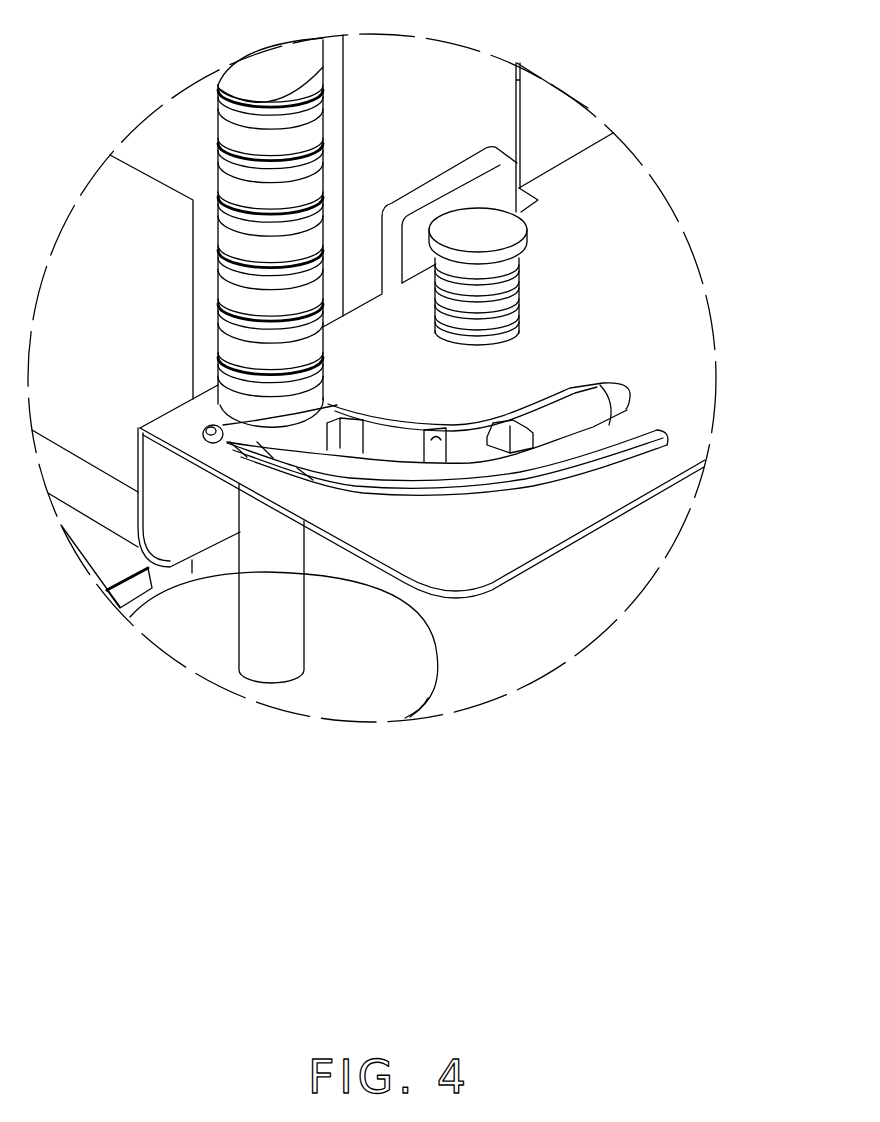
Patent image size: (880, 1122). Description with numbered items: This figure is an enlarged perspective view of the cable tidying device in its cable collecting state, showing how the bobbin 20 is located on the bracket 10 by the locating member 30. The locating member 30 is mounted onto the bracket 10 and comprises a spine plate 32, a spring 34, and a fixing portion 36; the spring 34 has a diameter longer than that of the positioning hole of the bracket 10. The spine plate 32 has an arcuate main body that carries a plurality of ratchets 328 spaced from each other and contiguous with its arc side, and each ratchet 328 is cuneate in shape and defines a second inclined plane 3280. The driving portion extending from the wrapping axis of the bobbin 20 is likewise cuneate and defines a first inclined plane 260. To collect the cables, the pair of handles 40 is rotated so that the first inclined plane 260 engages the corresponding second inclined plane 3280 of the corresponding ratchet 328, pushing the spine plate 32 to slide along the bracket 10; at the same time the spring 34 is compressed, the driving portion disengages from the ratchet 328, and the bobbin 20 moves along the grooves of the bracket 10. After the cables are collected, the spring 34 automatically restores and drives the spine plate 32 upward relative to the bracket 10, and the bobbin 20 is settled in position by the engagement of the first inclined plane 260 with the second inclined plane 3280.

The bracket 10 is at (678, 343).
The bobbin 20 is at (282, 637).
The first inclined plane 260 is at (238, 605).
The locating member 30 is at (650, 67).
The spine plate 32 is at (503, 180).
The spring 34 is at (517, 297).
The fixing portion 36 is at (507, 235).
The handle 40 is at (253, 83).
The ratchet 328 is at (507, 443).
The second inclined plane 3280 is at (503, 445).